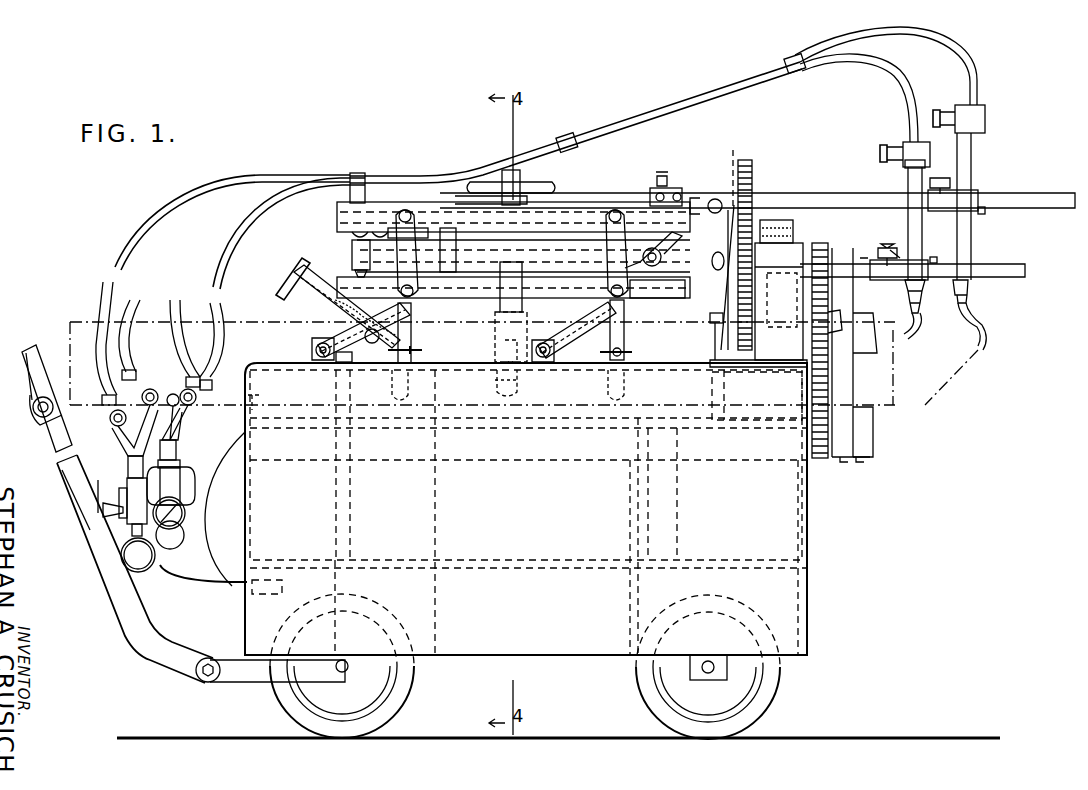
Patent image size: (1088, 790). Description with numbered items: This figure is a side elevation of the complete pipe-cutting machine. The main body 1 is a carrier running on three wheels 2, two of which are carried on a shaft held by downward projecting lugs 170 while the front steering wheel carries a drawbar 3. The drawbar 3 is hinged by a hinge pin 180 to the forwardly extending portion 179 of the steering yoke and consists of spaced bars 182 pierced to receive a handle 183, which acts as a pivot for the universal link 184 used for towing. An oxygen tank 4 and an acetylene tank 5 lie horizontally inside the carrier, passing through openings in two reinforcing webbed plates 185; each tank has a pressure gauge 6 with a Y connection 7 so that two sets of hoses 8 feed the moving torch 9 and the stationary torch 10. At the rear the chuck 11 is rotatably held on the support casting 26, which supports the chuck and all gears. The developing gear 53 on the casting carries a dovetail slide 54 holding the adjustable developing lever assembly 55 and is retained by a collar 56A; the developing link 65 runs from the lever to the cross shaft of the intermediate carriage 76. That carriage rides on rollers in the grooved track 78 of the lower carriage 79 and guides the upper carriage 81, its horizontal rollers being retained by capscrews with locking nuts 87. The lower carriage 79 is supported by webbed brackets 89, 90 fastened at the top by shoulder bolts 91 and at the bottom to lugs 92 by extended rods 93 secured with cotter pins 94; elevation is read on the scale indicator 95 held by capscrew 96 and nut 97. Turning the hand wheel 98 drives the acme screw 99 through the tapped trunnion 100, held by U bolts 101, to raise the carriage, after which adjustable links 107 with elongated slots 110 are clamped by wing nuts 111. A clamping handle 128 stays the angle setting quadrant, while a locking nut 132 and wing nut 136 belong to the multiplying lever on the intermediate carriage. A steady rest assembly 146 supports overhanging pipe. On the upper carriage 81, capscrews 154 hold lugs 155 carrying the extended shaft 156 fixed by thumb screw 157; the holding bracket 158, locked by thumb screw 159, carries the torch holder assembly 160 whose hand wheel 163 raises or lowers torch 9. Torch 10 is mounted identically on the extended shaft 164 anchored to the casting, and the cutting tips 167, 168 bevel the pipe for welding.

The main body 1 is at (565, 656).
The wheels 2 is at (409, 680).
The drawbar 3 is at (134, 640).
The oxygen tank 4 is at (185, 578).
The acetylene tank 5 is at (224, 584).
The pressure gauges 6 is at (150, 566).
The Y connection 7 is at (126, 438).
The hoses 8 is at (113, 290).
The moving torch 9 is at (972, 154).
The stationary torch 10 is at (910, 180).
The chuck 11 is at (848, 462).
The support casting 26 is at (768, 367).
The developing gear 53 is at (748, 162).
The dovetail slide 54 is at (733, 170).
The developing lever assembly 55 is at (696, 212).
The collar 56A is at (800, 244).
The developing link 65 is at (652, 282).
The intermediate carriage 76 is at (345, 218).
The grooved track 78 is at (664, 290).
The lower carriage 79 is at (340, 300).
The upper carriage 81 is at (390, 200).
The locking nuts 87 is at (448, 296).
The webbed supporting bracket 89 is at (577, 331).
The webbed supporting bracket 90 is at (362, 358).
The threaded shoulder bolts 91 is at (410, 302).
The lugs 92 is at (310, 356).
The extended rods 93 is at (310, 342).
The cotter pins 94 is at (429, 338).
The scale indicator 95 is at (512, 326).
The capscrew 96 is at (505, 352).
The nut 97 is at (512, 378).
The hand wheel 98 is at (296, 280).
The acme screw 99 is at (322, 305).
The tapped trunnion 100 is at (364, 332).
The U bolts 101 is at (422, 333).
The adjustable links 107 is at (626, 328).
The elongated slot 110 is at (610, 394).
The wing nuts 111 is at (634, 355).
The clamping handle 128 is at (520, 180).
The locking nut 132 is at (350, 270).
The wing nut 136 is at (350, 238).
The steady rest assembly 146 is at (250, 394).
The capscrews 154 is at (680, 190).
The lugs 155 is at (650, 190).
The extended shaft 156 is at (580, 204).
The thumb screw 157 is at (662, 174).
The adjustable holding bracket 158 is at (876, 262).
The thumb screw 159 is at (887, 244).
The torch holder assembly 160 is at (922, 238).
The hand wheel 163 is at (918, 248).
The extended shaft 164 is at (1012, 264).
The cutting tip 167 is at (976, 322).
The cutting tip 168 is at (908, 324).
The lugs 170 is at (728, 677).
The forwardly extending portion 179 is at (246, 683).
The hinge pin 180 is at (205, 678).
The spaced bars 182 is at (80, 506).
The handle 183 is at (50, 432).
The universal link 184 is at (32, 344).
The webbed plates 185 is at (440, 636).